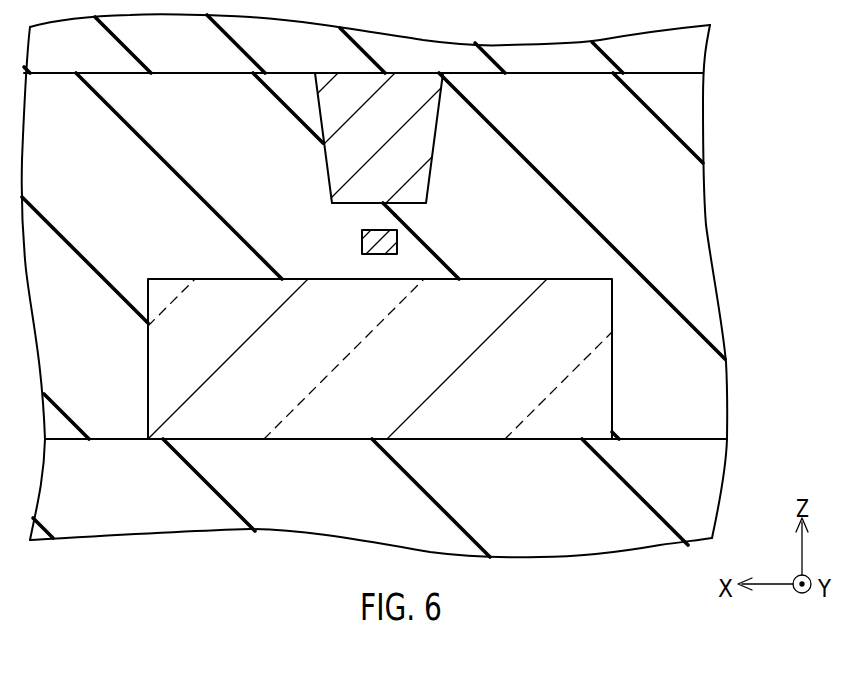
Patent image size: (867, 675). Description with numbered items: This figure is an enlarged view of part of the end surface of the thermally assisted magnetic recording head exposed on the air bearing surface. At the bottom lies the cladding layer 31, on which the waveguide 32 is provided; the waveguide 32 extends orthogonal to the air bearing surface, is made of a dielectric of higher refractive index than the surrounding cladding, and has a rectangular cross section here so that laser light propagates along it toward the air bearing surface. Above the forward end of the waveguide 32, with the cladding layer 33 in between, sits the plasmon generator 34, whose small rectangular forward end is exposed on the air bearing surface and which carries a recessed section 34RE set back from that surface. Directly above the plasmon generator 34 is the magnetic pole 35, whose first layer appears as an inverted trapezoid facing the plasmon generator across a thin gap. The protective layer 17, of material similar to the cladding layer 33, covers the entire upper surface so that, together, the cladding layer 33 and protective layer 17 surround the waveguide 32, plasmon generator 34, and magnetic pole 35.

The protective layer 17 is at (692, 50).
The cladding layer 31 is at (713, 467).
The waveguide 32 is at (603, 353).
The cladding layer 33 is at (687, 180).
The plasmon generator 34 is at (385, 240).
The recessed section 34RE is at (376, 219).
The magnetic pole 35 is at (420, 137).